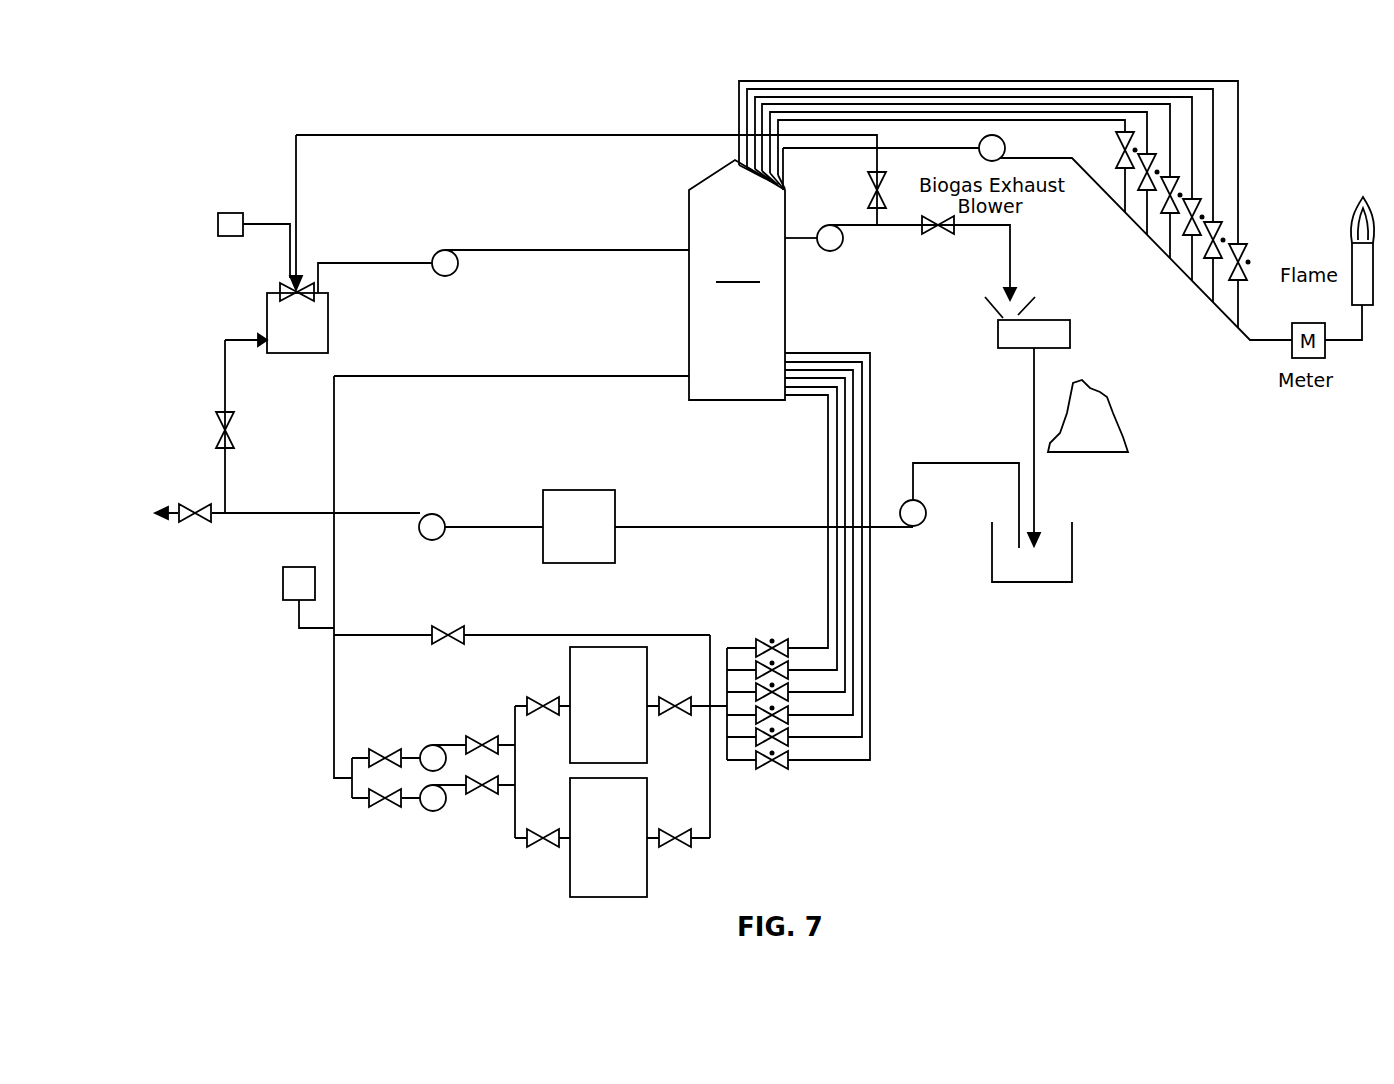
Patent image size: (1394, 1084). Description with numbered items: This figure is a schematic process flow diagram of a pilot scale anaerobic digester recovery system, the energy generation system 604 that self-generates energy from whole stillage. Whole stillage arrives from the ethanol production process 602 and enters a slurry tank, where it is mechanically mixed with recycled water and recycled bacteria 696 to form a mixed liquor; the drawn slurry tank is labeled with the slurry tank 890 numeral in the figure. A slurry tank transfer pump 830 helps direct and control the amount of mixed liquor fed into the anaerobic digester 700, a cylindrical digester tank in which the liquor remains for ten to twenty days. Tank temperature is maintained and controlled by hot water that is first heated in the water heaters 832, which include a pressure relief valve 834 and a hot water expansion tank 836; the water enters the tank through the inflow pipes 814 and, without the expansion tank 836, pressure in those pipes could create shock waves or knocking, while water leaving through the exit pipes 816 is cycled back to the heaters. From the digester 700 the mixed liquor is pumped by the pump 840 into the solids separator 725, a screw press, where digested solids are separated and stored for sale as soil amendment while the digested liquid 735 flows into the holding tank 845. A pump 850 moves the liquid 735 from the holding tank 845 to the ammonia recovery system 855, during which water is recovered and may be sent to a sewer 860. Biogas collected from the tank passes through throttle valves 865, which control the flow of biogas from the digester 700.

The ethanol production process 602 is at (232, 212).
The energy generation system 604 is at (1204, 468).
The recycled bacteria 696 is at (540, 137).
The anaerobic digester 700 is at (737, 321).
The solids separator 725 is at (1040, 320).
The digested liquid 735 is at (1034, 420).
The inflow pipes 814 is at (334, 718).
The water exiting pipes 816 is at (874, 686).
The slurry tank transfer pump 830 is at (436, 253).
The water heaters 832 is at (650, 660).
The pressure relief valve 834 is at (432, 640).
The hot water expansion tank 836 is at (300, 567).
The pump 840 is at (822, 226).
The holding tank 845 is at (1072, 545).
The pump 850 is at (926, 515).
The ammonia recovery system 855 is at (543, 512).
The sewer 860 is at (178, 505).
The throttle valves 865 is at (1157, 243).
The slurry tank 890 is at (267, 320).